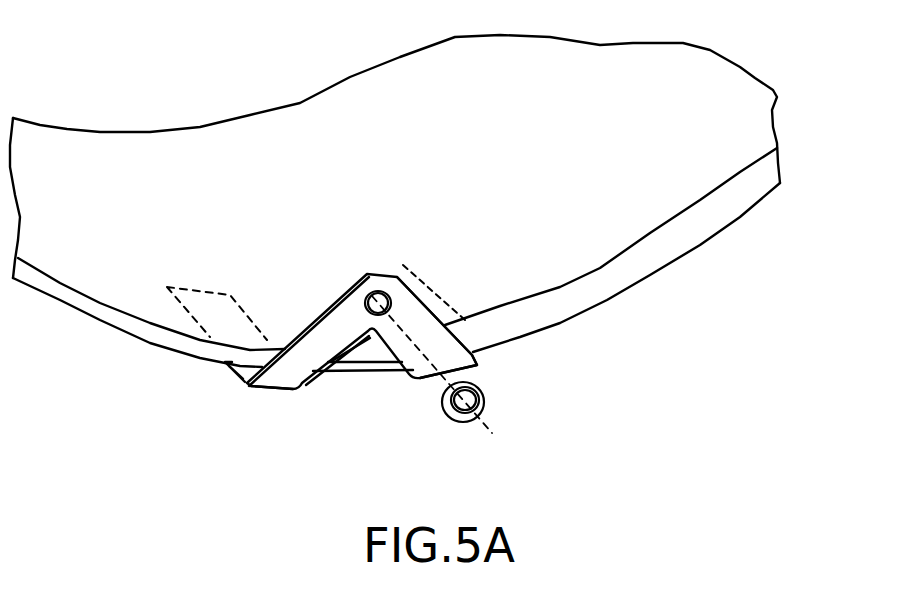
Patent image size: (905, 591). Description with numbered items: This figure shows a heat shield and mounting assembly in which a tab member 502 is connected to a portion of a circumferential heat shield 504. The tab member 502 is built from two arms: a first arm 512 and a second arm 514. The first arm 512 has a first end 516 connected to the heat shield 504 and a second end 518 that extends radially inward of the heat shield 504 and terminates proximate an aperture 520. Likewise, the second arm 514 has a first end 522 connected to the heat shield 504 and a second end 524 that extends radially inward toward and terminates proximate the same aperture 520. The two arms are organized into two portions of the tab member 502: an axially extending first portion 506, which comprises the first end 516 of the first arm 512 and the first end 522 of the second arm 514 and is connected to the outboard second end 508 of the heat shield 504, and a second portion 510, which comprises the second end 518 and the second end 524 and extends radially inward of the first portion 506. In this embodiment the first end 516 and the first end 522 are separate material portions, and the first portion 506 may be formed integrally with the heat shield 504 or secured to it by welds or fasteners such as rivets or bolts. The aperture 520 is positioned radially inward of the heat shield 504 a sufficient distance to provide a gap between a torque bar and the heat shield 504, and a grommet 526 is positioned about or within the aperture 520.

The tab member 502 is at (297, 336).
The circumferential heat shield 504 is at (743, 86).
The first portion 506 is at (227, 366).
The second end 508 is at (760, 188).
The second portion 510 is at (303, 368).
The first arm 512 is at (278, 377).
The second arm 514 is at (448, 355).
The first end 516 is at (203, 313).
The second end 518 is at (330, 308).
The aperture 520 is at (372, 290).
The first end 522 is at (423, 288).
The second end 524 is at (398, 280).
The grommet 526 is at (483, 407).